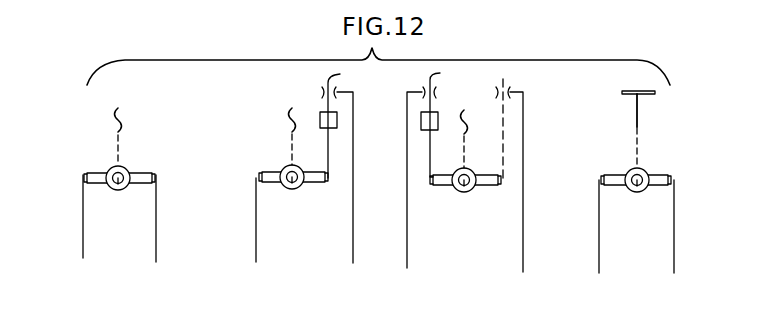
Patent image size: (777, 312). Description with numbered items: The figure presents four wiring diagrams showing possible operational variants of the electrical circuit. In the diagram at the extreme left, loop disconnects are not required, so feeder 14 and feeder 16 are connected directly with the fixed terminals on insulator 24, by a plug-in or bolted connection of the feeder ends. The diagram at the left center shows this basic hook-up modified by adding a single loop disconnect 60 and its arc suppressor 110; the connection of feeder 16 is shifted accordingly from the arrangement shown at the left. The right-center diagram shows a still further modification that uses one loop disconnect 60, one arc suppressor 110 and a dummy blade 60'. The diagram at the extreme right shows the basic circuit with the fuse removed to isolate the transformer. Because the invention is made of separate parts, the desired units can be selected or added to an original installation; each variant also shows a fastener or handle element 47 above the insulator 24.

The feeder 14 is at (83, 225).
The feeder 16 is at (156, 229).
The insulator 24 is at (126, 166).
The fastener / handle 47 is at (122, 113).
The loop disconnect 60 is at (394, 121).
The dummy blade 60' is at (525, 122).
The arc suppressor 110 is at (320, 120).